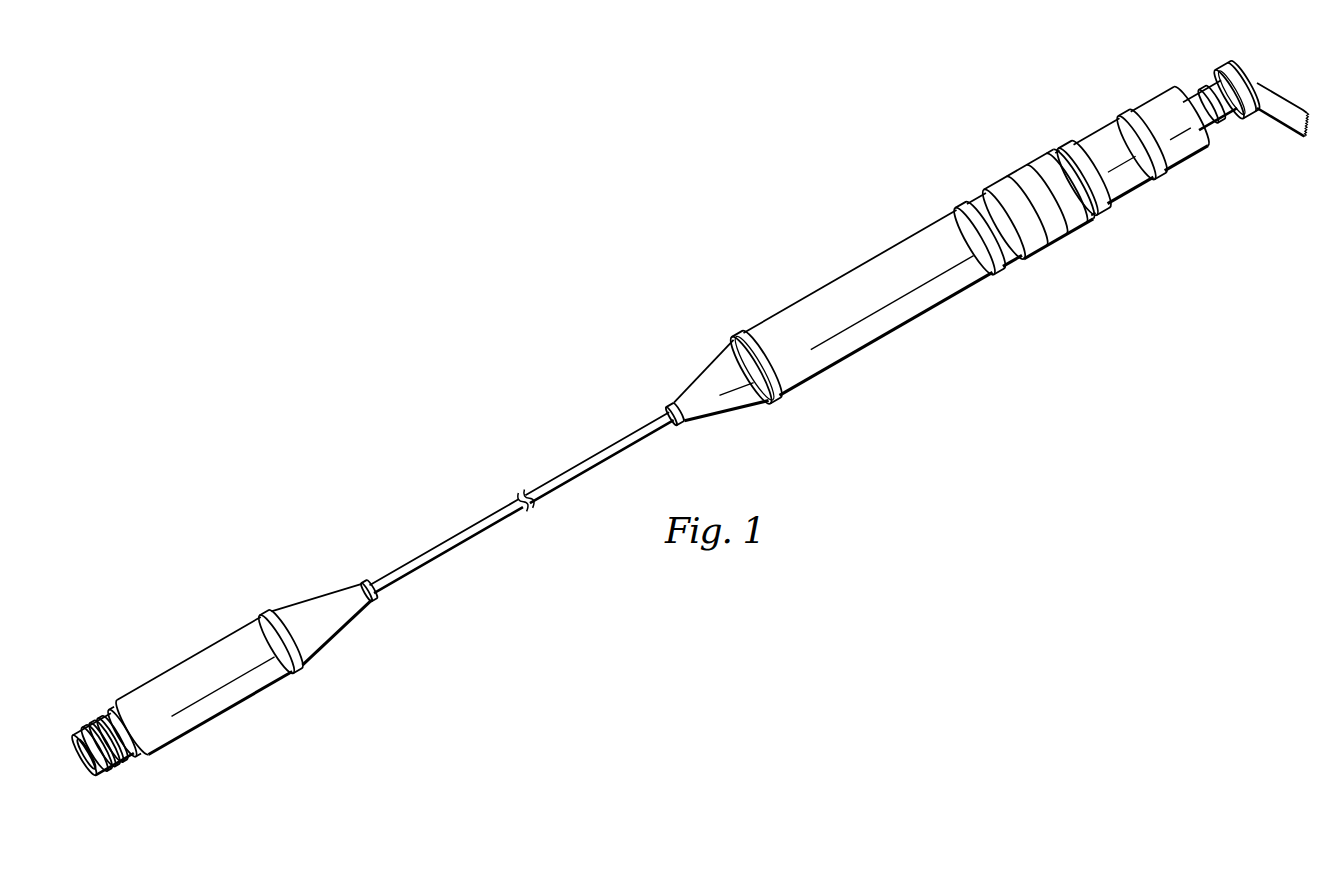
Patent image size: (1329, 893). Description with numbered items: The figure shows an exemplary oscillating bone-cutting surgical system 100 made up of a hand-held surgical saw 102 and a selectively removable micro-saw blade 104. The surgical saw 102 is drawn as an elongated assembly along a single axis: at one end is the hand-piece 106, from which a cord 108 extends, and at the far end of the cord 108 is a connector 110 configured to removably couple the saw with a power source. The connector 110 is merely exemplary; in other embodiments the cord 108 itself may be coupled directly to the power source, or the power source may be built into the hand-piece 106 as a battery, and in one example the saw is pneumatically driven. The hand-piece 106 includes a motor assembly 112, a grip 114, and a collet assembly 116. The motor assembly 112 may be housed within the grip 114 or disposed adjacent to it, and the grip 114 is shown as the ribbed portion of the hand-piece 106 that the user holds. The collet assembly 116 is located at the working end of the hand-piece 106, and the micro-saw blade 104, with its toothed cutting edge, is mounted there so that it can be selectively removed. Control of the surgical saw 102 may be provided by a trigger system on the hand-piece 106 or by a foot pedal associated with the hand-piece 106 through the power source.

The bone-cutting surgical system 100 is at (425, 353).
The hand-held surgical saw 102 is at (818, 212).
The micro-saw blade 104 is at (1280, 135).
The hand-piece 106 is at (904, 219).
The cord 108 is at (575, 460).
The connector 110 is at (225, 714).
The motor assembly 112 is at (808, 292).
The grip 114 is at (1000, 180).
The collet assembly 116 is at (1149, 94).